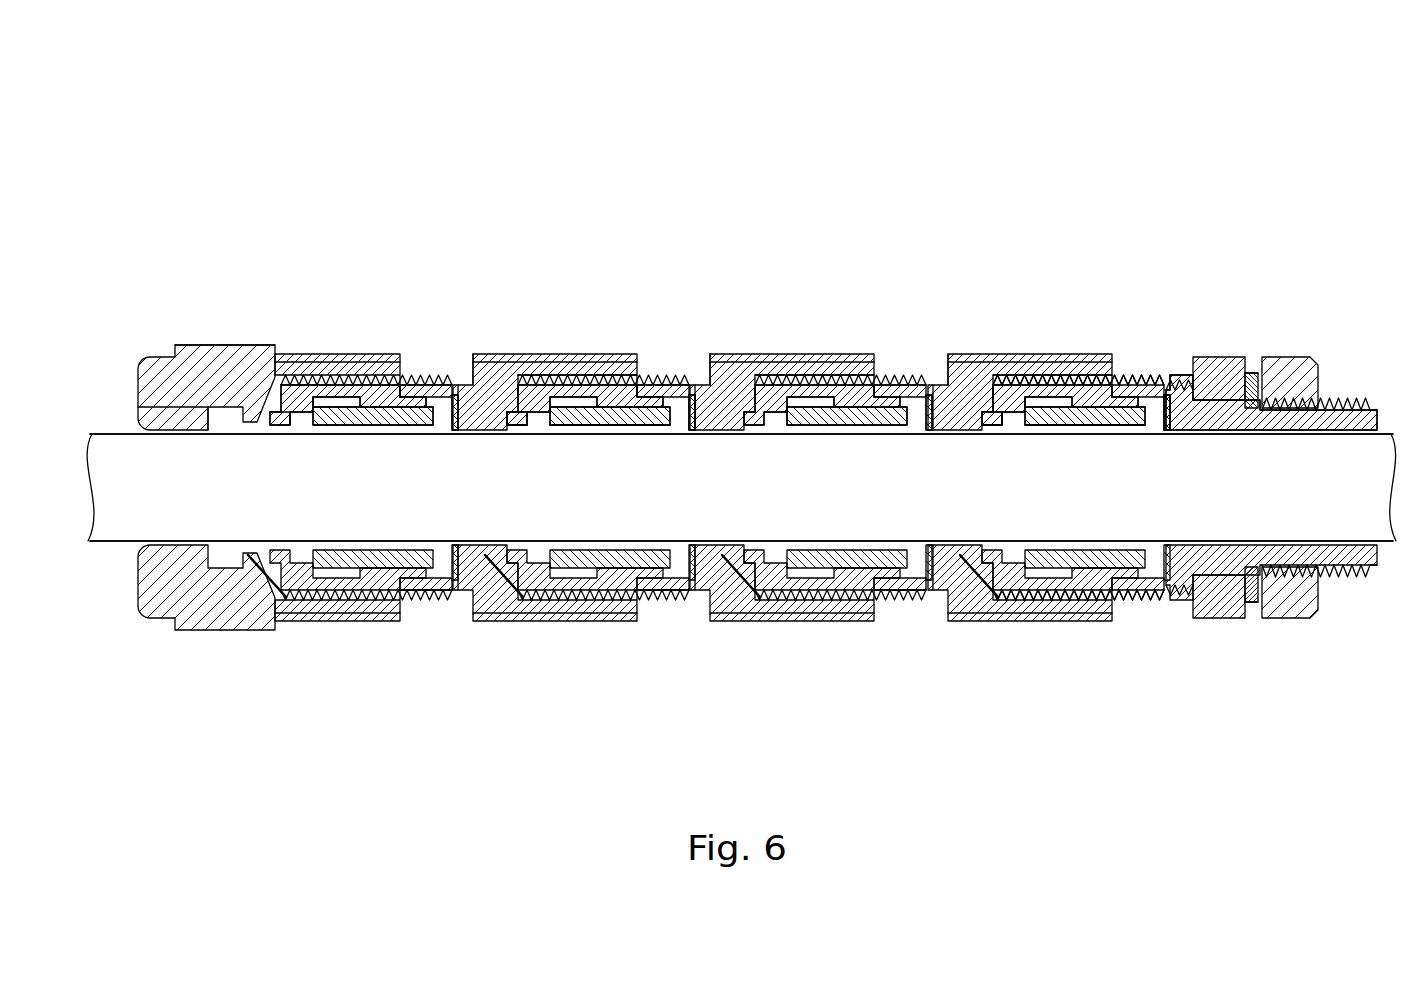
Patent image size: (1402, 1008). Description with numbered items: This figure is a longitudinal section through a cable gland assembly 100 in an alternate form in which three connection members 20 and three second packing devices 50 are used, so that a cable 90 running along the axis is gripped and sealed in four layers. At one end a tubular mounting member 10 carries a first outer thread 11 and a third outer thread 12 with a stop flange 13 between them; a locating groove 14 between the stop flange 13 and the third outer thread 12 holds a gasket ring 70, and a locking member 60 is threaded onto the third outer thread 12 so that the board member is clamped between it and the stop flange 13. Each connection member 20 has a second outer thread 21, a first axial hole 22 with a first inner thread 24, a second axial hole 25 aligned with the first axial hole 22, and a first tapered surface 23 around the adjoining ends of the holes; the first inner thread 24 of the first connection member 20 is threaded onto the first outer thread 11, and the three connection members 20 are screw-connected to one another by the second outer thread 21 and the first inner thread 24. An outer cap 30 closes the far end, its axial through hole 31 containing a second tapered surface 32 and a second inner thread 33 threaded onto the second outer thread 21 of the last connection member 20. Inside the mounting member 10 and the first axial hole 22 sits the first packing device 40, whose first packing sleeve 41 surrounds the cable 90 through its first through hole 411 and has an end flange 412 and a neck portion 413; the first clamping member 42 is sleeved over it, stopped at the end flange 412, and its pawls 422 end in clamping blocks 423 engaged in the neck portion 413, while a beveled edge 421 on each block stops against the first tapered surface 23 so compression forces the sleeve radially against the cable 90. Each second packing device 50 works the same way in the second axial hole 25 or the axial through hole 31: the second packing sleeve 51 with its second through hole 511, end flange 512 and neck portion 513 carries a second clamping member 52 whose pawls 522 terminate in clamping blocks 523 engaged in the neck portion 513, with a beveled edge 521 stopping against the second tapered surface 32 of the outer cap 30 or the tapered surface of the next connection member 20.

The cable gland assembly 100 is at (699, 162).
The mounting member 10 is at (1353, 262).
The first outer thread 11 is at (1130, 383).
The third outer thread 12 is at (1345, 397).
The stop flange 13 is at (1200, 356).
The locating groove 14 is at (1253, 356).
The connection member 20 is at (511, 351).
The second outer thread 21 is at (412, 378).
The first axial hole 22 is at (497, 423).
The first tapered surface 23 is at (480, 353).
The first inner thread 24 is at (545, 380).
The second axial hole 25 is at (426, 580).
The outer cap 30 is at (207, 336).
The axial through hole 31 is at (199, 428).
The second tapered surface 32 is at (262, 393).
The second inner thread 33 is at (372, 378).
The first packing device 40 is at (1067, 395).
The first packing sleeve 41 is at (1100, 426).
The first through hole 411 is at (1062, 428).
The end flange 412 is at (1166, 430).
The neck portion 413 is at (975, 428).
The first clamping member 42 is at (1093, 388).
The beveled edge 421 is at (992, 385).
The pawls 422 is at (1035, 412).
The clamping block 423 is at (1012, 416).
The second packing device 50 is at (342, 386).
The second packing sleeve 51 is at (360, 426).
The second through hole 511 is at (603, 428).
The end flange 512 is at (691, 430).
The neck portion 513 is at (280, 424).
The second clamping member 52 is at (595, 388).
The beveled edge 521 is at (273, 383).
The pawls 522 is at (278, 407).
The clamping block 523 is at (521, 421).
The locking member 60 is at (1293, 612).
The gasket ring 70 is at (1252, 612).
The cable 90 is at (105, 540).